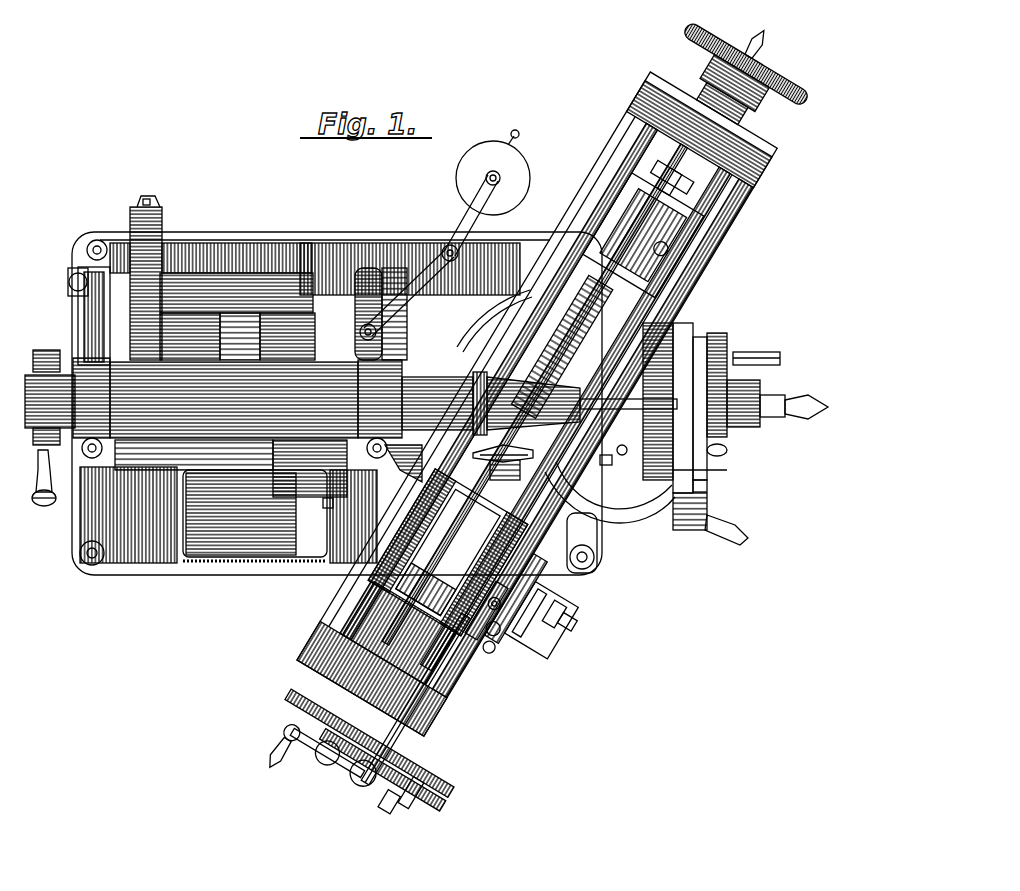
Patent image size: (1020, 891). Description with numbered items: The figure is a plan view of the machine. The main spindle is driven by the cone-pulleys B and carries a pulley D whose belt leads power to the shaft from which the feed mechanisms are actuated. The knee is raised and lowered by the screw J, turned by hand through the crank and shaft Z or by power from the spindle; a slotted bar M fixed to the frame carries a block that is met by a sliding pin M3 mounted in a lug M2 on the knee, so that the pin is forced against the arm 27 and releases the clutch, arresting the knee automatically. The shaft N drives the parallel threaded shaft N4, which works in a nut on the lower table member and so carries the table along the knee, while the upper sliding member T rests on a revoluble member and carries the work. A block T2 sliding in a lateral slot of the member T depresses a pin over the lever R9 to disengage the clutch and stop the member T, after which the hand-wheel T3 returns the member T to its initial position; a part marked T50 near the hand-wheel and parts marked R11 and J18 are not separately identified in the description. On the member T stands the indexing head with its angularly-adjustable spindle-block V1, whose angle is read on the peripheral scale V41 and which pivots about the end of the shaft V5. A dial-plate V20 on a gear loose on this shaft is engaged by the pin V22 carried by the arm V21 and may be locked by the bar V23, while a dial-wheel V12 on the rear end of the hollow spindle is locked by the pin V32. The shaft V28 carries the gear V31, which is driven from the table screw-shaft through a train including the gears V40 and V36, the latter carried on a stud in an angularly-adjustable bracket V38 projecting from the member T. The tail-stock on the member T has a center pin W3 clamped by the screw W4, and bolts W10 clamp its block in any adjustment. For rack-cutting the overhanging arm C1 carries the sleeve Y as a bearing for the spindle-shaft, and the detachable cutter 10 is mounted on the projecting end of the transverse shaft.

The cone-pulleys B is at (283, 462).
The pulley D is at (50, 362).
The slotted bar M is at (331, 278).
The lug M2 is at (421, 258).
The sliding pin M3 is at (490, 262).
The overhanging arm C1 is at (351, 398).
The sleeve Y is at (522, 472).
The detachable cutter 10 is at (528, 460).
The screw J is at (600, 166).
The arm 27 is at (504, 385).
The screw W4 is at (660, 283).
The bolts W10 is at (688, 233).
The center pin W3 is at (682, 190).
The hand-wheel T3 is at (754, 53).
The stem T50 is at (725, 97).
The spindle-block V1 is at (448, 552).
The dial-wheel V12 is at (366, 632).
The arm V21 is at (553, 600).
The pin V22 is at (565, 622).
The shaft V5 is at (536, 648).
The dial-plate V20 is at (502, 665).
The bar V23 is at (483, 674).
The peripheral scale V41 is at (492, 676).
The pin V32 is at (470, 698).
The shaft V28 is at (430, 725).
The gear V40 is at (297, 700).
The gear V36 is at (442, 776).
The angularly-adjustable bracket V38 is at (442, 763).
The gear V31 is at (406, 785).
The upper sliding member T is at (647, 448).
The block T2 is at (608, 490).
The arm R11 is at (622, 490).
The lever R9 is at (697, 478).
The threaded shaft N4 is at (773, 358).
The shaft N is at (752, 401).
The pin J18 is at (728, 452).
The crank and shaft Z is at (727, 535).